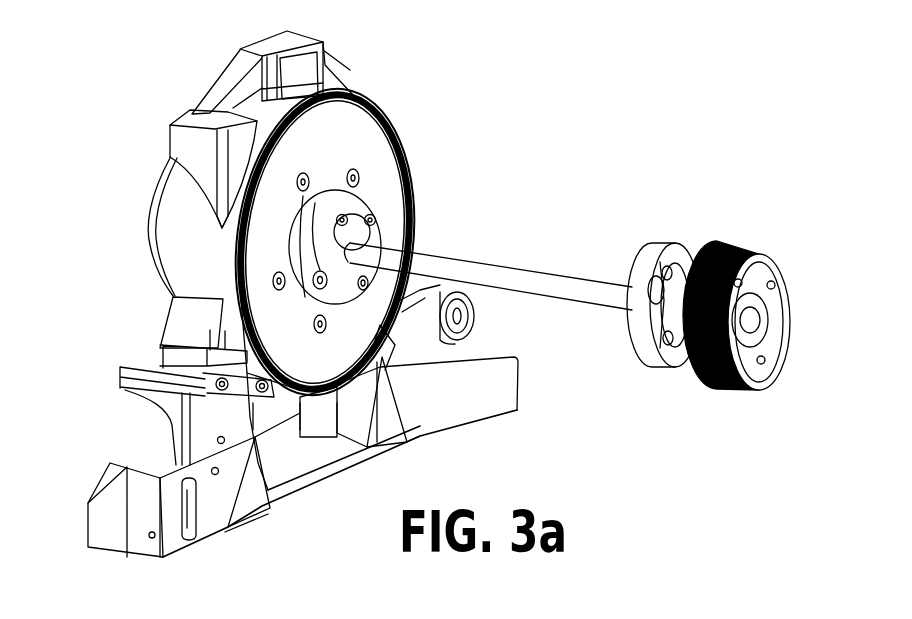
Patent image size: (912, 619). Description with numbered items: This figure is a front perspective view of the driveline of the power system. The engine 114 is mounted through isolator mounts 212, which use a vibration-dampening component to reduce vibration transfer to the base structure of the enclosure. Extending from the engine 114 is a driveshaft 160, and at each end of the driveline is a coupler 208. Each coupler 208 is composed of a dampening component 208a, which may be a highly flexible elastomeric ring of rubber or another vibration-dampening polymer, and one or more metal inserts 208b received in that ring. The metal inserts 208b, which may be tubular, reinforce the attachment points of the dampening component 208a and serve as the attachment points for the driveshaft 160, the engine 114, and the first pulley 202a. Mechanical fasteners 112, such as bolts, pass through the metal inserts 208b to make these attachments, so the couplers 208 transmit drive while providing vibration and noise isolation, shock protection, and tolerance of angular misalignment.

The engine 114 is at (152, 64).
The mechanical fasteners 112 is at (352, 232).
The driveshaft 160 is at (538, 297).
The first pulley 202a is at (777, 258).
The coupler 208 is at (382, 172).
The dampening component 208a is at (335, 183).
The metal inserts 208b is at (390, 212).
The isolator mounts 212 is at (157, 355).